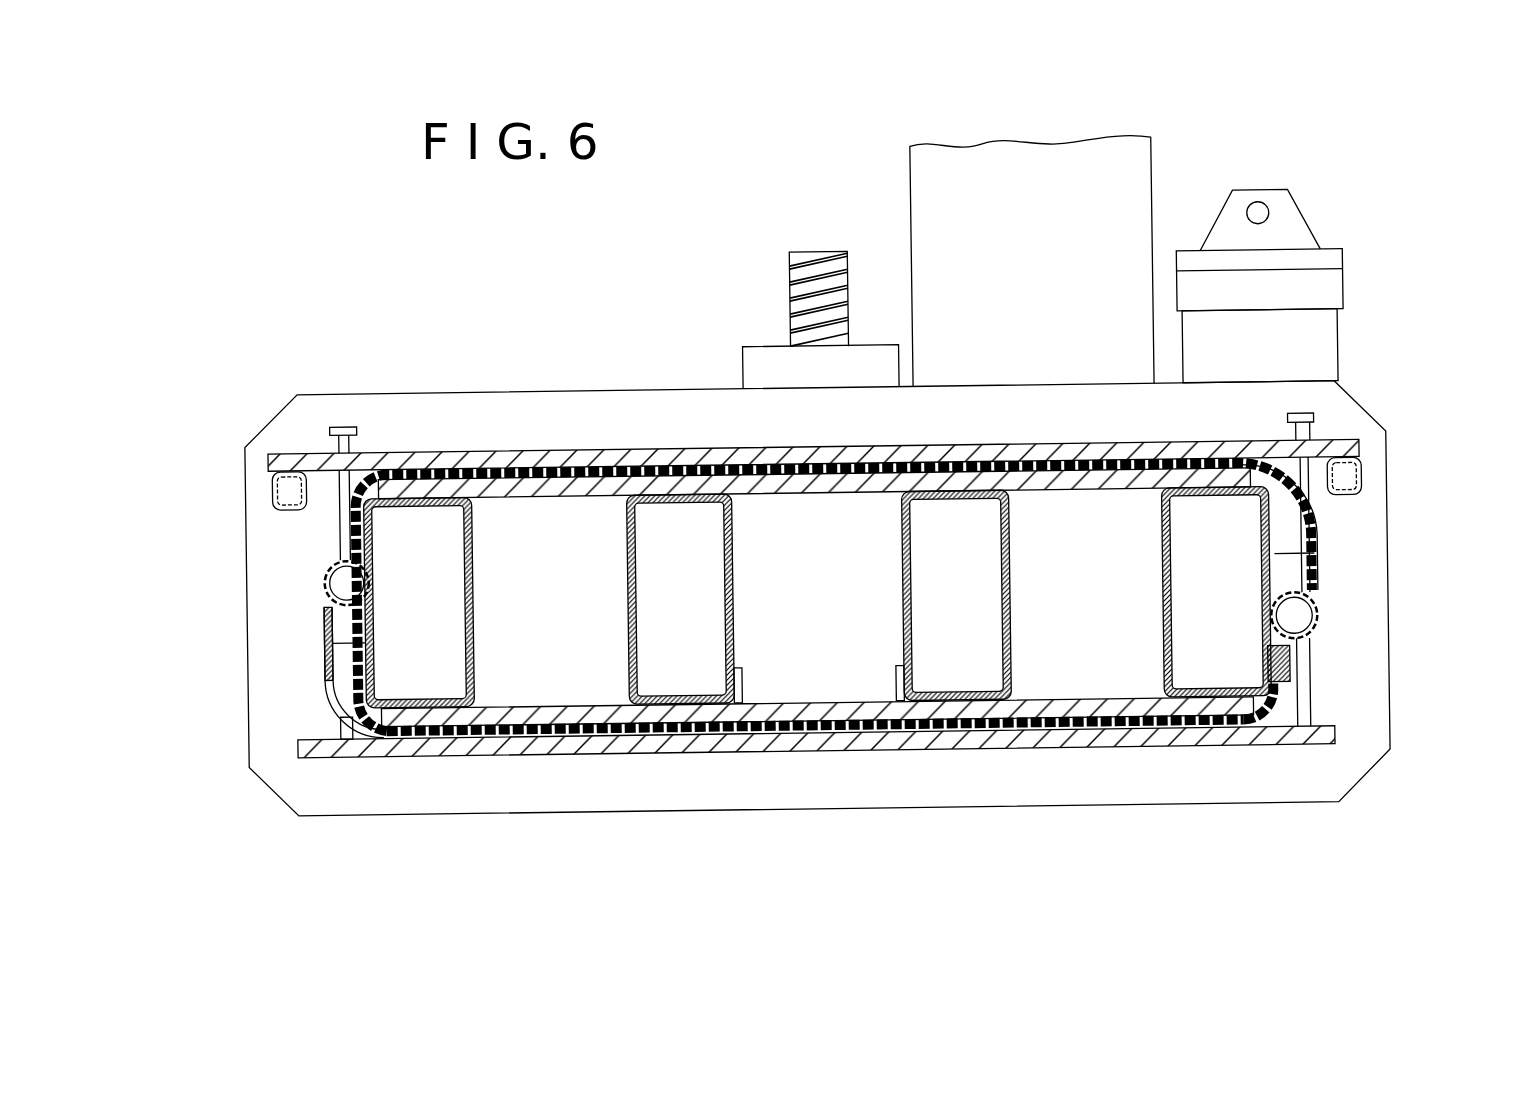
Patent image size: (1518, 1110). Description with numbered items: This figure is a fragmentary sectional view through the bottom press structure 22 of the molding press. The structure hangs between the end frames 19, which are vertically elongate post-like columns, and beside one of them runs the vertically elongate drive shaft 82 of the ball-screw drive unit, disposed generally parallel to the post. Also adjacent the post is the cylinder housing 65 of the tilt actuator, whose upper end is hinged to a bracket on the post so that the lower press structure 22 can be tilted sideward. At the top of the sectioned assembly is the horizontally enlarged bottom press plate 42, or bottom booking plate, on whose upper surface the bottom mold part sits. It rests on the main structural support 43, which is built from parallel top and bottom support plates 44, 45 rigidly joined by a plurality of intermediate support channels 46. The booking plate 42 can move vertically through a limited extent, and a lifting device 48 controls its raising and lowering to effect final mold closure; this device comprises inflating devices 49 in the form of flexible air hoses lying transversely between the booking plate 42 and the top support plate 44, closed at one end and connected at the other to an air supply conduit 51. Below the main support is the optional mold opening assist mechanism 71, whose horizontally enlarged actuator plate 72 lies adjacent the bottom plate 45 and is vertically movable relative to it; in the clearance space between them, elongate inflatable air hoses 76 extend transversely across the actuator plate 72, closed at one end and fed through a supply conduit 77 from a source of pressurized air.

The end frame 19 is at (964, 147).
The bottom press structure 22 is at (366, 318).
The bottom press plate 42 is at (598, 452).
The main structural support 43 is at (878, 660).
The top support plate 44 is at (528, 486).
The bottom support plate 45 is at (555, 709).
The intermediate support channel 46 is at (475, 618).
The lifting device 48 is at (1342, 524).
The inflating device 49 is at (470, 461).
The air supply conduit 51 is at (1300, 625).
The cylinder housing 65 is at (1329, 347).
The mold opening assist mechanism 71 is at (284, 680).
The actuator plate 72 is at (531, 741).
The inflatable air hose 76 is at (658, 726).
The supply conduit 77 is at (340, 576).
The drive shaft 82 is at (794, 292).